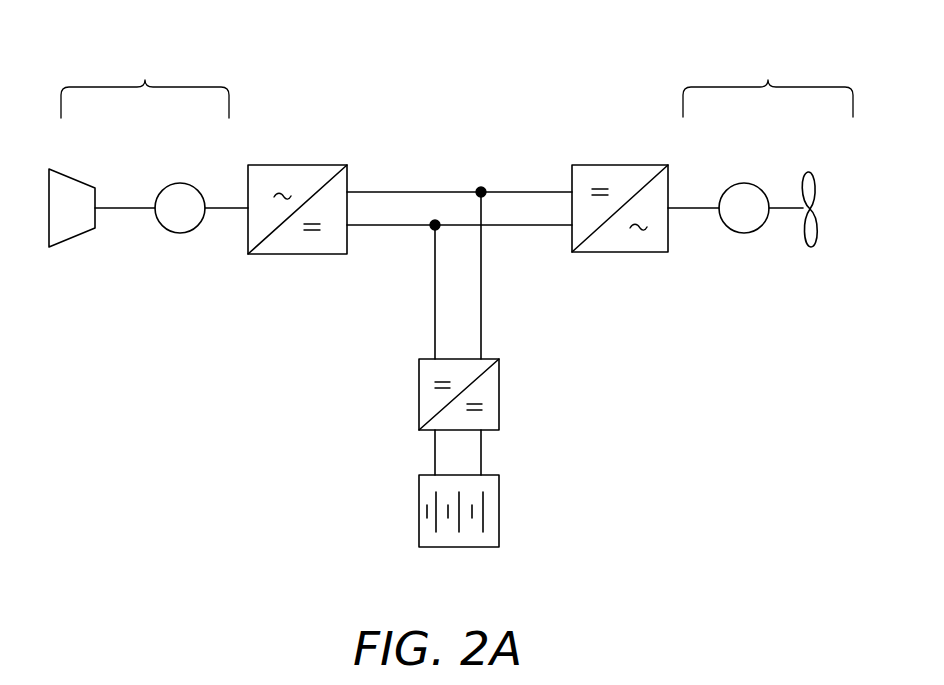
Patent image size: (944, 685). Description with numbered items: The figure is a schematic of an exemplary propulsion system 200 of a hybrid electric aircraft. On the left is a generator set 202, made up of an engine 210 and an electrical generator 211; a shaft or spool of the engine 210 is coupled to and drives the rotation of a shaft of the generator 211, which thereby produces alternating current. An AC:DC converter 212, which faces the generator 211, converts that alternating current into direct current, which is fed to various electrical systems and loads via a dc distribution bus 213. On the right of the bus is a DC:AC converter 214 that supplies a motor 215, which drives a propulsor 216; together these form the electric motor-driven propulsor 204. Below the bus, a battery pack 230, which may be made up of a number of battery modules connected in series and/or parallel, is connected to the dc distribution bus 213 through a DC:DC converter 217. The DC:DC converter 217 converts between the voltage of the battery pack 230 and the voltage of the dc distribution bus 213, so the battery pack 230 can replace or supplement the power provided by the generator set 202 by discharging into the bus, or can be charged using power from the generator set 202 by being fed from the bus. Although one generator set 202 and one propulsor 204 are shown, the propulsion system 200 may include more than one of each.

The propulsion system 200 is at (217, 48).
The generator set 202 is at (145, 81).
The electric motor-driven propulsor 204 is at (768, 81).
The engine 210 is at (73, 172).
The electrical generator 211 is at (181, 183).
The AC:DC converter 212 is at (297, 165).
The dc distribution bus 213 is at (400, 192).
The DC:AC converter 214 is at (620, 165).
The motor 215 is at (743, 183).
The propulsor 216 is at (809, 172).
The DC:DC converter 217 is at (499, 393).
The battery pack 230 is at (499, 510).